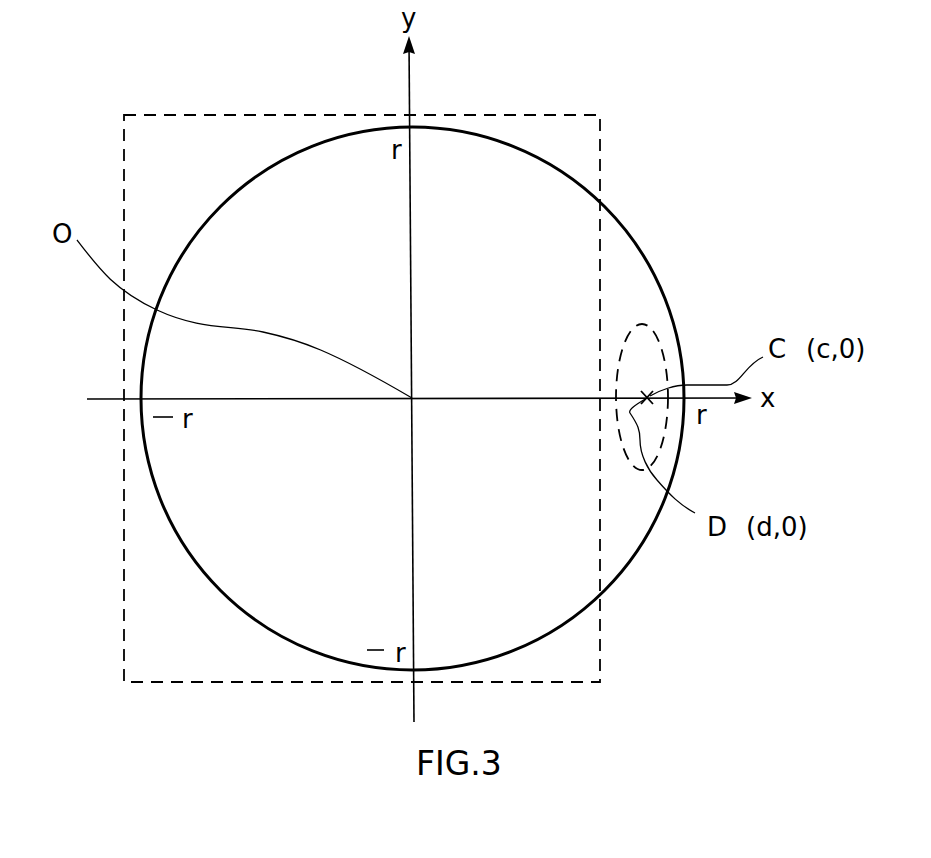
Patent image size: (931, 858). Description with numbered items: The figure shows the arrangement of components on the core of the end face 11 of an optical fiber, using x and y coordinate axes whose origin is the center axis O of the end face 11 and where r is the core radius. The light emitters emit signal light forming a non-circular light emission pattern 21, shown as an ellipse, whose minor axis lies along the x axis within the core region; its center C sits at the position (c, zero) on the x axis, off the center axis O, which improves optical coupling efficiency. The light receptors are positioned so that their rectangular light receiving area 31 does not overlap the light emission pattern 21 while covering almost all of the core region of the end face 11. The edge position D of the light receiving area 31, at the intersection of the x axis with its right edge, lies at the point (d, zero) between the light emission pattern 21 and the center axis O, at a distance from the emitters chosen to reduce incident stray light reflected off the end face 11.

The end face 11 is at (600, 203).
The light emission pattern 21 is at (652, 328).
The light receiving area 31 is at (544, 113).